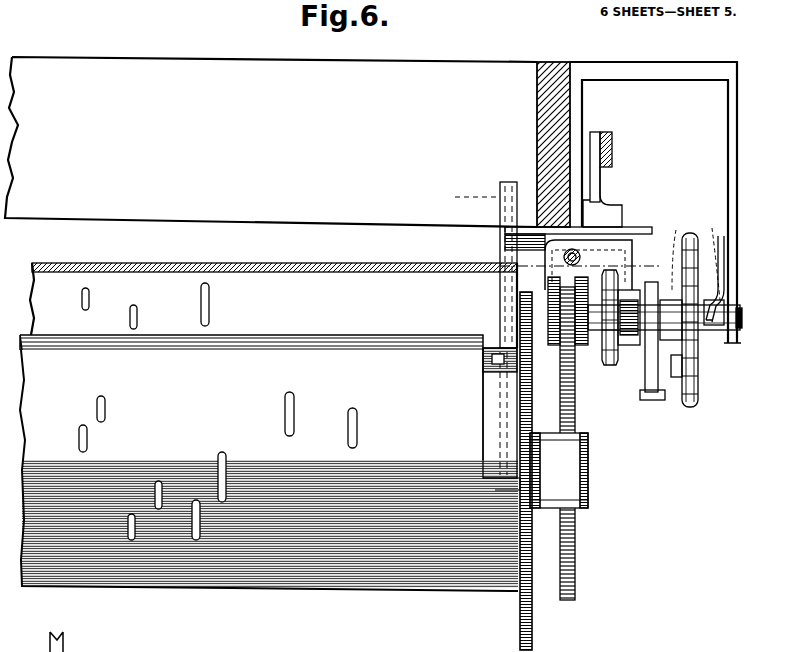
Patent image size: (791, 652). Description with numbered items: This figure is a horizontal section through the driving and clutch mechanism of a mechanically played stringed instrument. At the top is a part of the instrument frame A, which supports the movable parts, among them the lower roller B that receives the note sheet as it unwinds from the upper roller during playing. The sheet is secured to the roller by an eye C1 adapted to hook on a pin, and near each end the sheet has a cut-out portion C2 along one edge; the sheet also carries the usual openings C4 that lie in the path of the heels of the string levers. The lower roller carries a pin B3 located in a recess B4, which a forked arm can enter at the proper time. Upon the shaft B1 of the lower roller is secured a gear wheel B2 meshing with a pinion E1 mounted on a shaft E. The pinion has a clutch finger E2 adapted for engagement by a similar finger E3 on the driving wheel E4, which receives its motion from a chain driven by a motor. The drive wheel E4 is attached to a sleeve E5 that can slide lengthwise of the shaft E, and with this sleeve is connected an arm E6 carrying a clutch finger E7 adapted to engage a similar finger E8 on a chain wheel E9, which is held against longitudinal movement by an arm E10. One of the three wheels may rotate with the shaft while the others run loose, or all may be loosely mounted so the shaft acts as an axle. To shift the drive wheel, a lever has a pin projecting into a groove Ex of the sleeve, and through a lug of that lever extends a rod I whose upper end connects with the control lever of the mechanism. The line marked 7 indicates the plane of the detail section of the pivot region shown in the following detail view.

The instrument frame A is at (287, 142).
The rod I is at (495, 208).
The section line 7— 7 is at (663, 262).
The clutch finger E2 is at (618, 285).
The pinion E1 is at (552, 350).
The clutch finger E3 is at (610, 368).
The groove Ex is at (636, 346).
The driving wheel E4 is at (650, 340).
The sleeve E5 is at (677, 244).
The arm E6 is at (662, 395).
The clutch finger E7 is at (690, 410).
The clutch finger E8 is at (680, 400).
The chain wheel E9 is at (700, 370).
The arm E10 is at (708, 249).
The shaft E is at (744, 318).
The lower roller B is at (518, 629).
The shaft of the lower roller B1 is at (586, 508).
The gear wheel B2 is at (578, 586).
The pin B3 is at (495, 350).
The recess B4 is at (483, 412).
The eye C1 is at (273, 305).
The cut-out portion C2 is at (482, 441).
The openings C4 is at (269, 463).